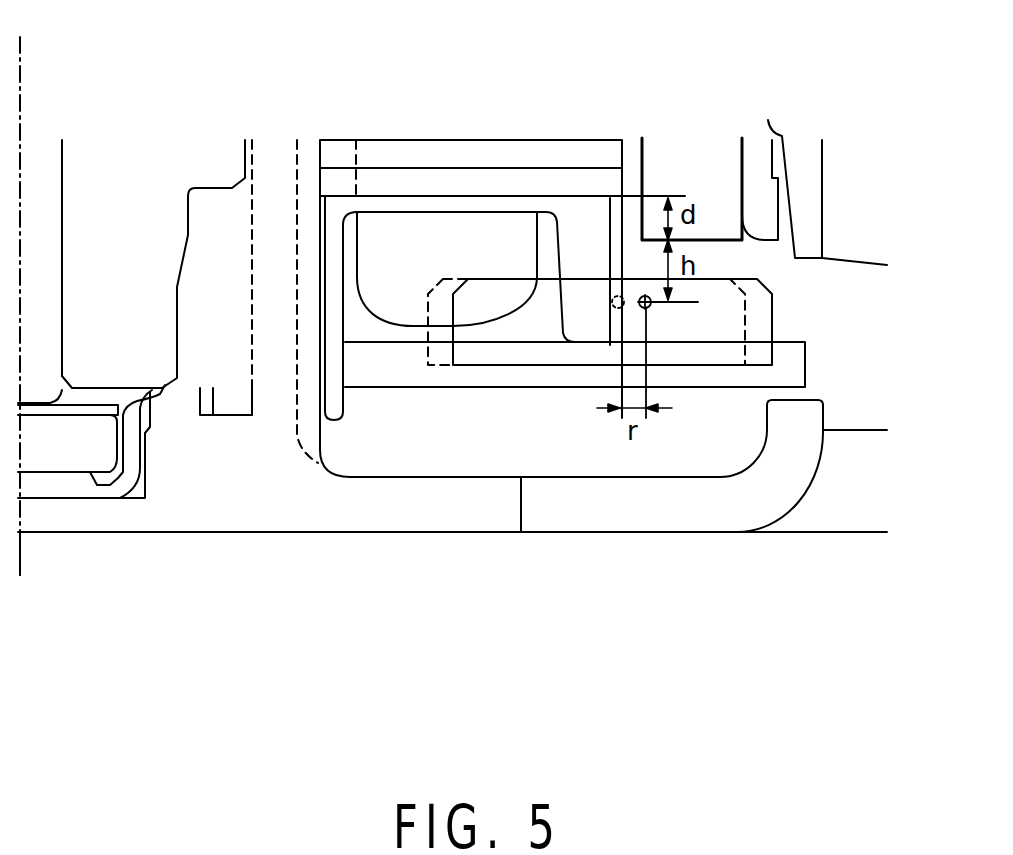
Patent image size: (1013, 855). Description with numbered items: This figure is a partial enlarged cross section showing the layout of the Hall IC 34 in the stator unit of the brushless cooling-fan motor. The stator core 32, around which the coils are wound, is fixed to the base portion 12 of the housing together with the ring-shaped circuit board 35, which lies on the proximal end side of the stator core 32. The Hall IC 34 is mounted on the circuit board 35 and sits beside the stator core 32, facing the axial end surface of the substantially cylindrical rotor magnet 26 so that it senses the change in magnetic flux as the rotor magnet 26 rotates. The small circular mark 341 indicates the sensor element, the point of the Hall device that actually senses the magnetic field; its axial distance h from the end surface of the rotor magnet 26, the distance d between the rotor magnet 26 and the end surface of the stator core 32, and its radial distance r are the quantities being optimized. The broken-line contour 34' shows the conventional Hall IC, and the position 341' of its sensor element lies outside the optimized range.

The base portion 12 is at (467, 532).
The rotor magnet 26 is at (688, 168).
The stator core 32 is at (542, 152).
The Hall IC 34 is at (684, 322).
The contour of conventional Hall IC 34' is at (645, 318).
The circuit board 35 is at (805, 365).
The sensor element 341 is at (694, 370).
The position of conventional sensor element 341' is at (567, 371).